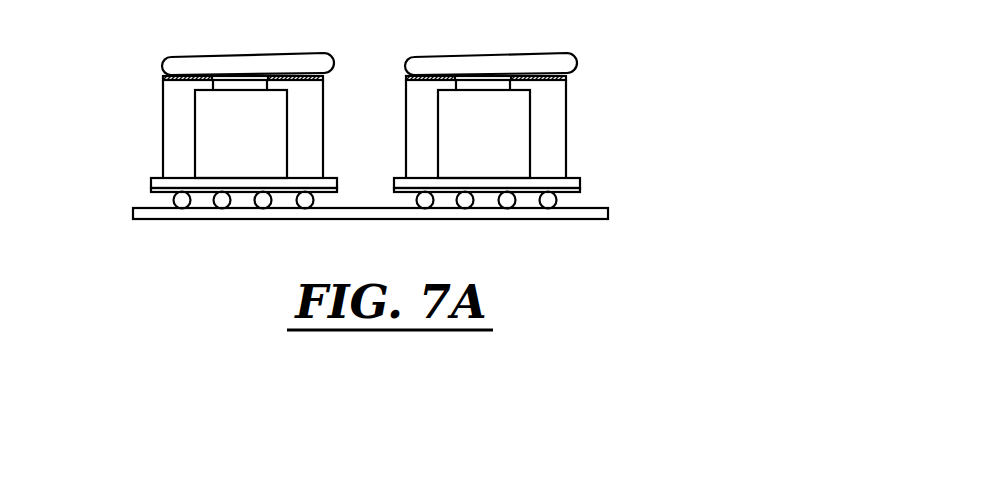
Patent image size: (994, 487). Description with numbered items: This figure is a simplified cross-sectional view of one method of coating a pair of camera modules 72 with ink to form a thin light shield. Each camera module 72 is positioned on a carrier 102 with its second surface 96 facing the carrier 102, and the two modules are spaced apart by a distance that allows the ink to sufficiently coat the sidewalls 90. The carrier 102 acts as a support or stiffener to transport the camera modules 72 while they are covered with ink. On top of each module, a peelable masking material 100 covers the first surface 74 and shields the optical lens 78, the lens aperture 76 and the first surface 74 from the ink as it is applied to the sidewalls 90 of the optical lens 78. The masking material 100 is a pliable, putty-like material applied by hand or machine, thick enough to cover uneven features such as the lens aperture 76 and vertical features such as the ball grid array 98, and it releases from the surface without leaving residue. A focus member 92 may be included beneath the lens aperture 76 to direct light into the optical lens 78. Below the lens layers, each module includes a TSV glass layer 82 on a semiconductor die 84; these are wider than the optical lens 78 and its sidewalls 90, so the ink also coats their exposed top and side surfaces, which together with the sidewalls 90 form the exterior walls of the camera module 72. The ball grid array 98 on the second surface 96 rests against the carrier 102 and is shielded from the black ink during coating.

The camera module 72 is at (134, 86).
The first surface 74 is at (185, 66).
The lens aperture 76 is at (234, 78).
The optical lens 78 is at (223, 120).
The TSV glass layer 82 is at (152, 185).
The semiconductor die 84 is at (152, 190).
The sidewalls 90 is at (154, 146).
The focus member 92 is at (253, 87).
The second surface 96 is at (198, 204).
The ball grid array 98 is at (461, 207).
The masking material 100 is at (310, 65).
The carrier 102 is at (588, 212).